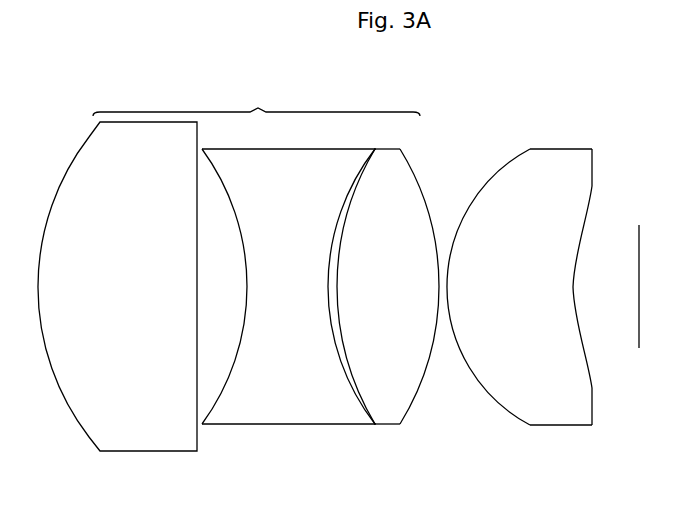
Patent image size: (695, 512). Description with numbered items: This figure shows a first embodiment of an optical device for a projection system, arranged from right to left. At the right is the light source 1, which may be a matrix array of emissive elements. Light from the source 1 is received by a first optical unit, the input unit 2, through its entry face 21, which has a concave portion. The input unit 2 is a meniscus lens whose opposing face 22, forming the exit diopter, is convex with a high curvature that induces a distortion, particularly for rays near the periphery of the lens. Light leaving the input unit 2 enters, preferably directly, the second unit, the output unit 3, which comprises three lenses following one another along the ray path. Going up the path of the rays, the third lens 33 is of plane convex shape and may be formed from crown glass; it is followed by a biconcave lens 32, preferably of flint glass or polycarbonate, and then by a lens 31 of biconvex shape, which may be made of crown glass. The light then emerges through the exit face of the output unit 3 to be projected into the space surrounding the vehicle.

The light source 1 is at (639, 273).
The input unit 2 is at (545, 290).
The entry face 21 is at (587, 376).
The second surface of lens element 2 22 is at (520, 418).
The output unit 3 is at (238, 282).
The lens 31 is at (385, 417).
The biconcave lens 32 is at (273, 417).
The third lens 33 is at (148, 417).